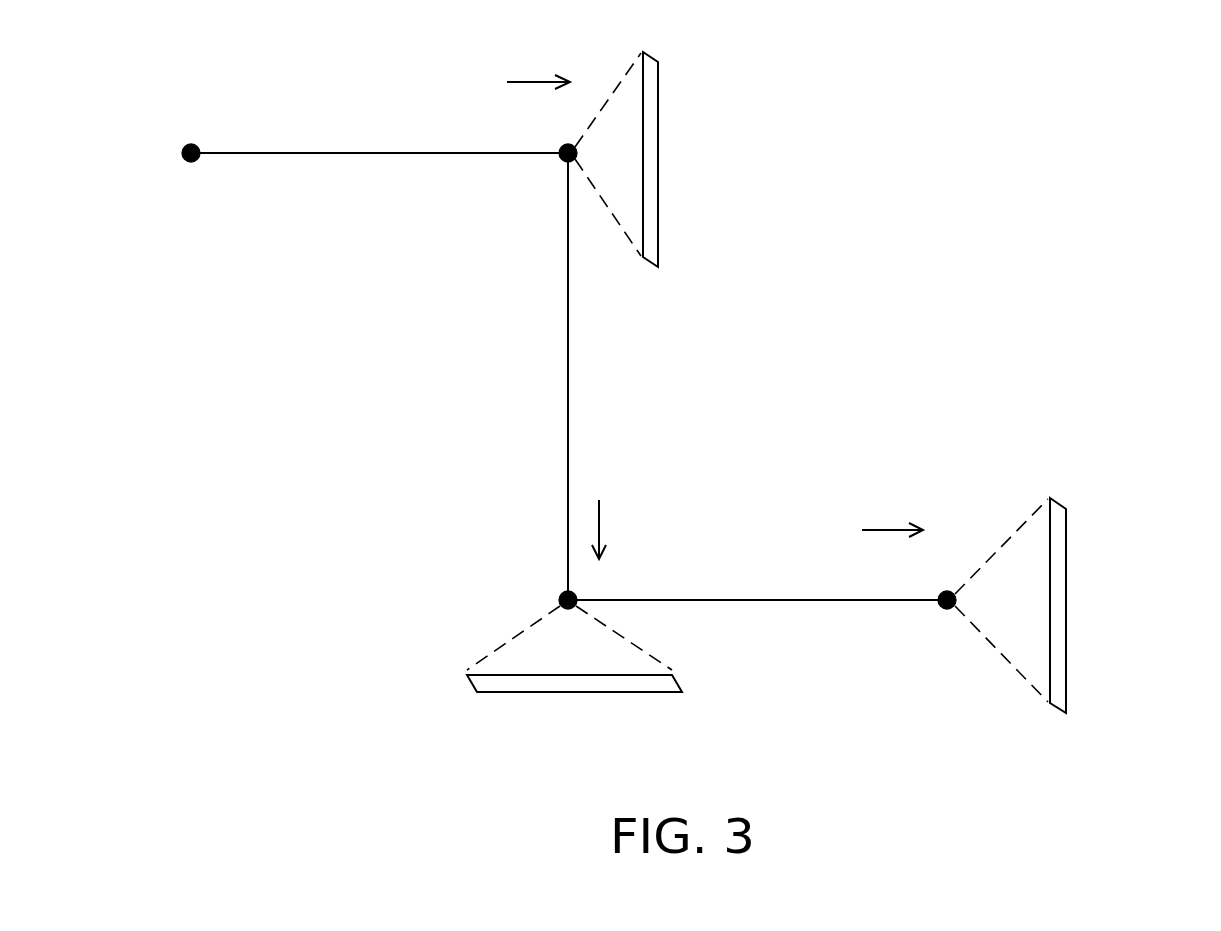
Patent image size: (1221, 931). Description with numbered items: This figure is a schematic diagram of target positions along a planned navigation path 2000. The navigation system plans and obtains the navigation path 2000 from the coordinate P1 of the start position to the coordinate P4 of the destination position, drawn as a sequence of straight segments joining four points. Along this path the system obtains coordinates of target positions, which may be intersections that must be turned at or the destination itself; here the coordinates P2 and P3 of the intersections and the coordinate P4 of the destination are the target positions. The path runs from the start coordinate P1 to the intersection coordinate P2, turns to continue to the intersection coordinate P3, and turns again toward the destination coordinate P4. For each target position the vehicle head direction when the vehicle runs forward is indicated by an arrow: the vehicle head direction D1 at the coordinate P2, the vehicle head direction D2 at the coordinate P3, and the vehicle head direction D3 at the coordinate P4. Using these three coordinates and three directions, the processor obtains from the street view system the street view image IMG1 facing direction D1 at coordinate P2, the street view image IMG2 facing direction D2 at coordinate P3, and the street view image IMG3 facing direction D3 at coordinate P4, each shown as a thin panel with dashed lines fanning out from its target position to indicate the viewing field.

The navigation path 2000 is at (1220, 782).
The coordinate of the start position P1 is at (191, 162).
The coordinate of the intersection P2 is at (561, 160).
The coordinate of the intersection P3 is at (561, 594).
The coordinate of the destination position P4 is at (947, 609).
The vehicle head direction D1 is at (532, 80).
The vehicle head direction D2 is at (601, 522).
The vehicle head direction D3 is at (885, 529).
The street view image IMG1 is at (659, 145).
The street view image IMG2 is at (568, 693).
The street view image IMG3 is at (1067, 608).